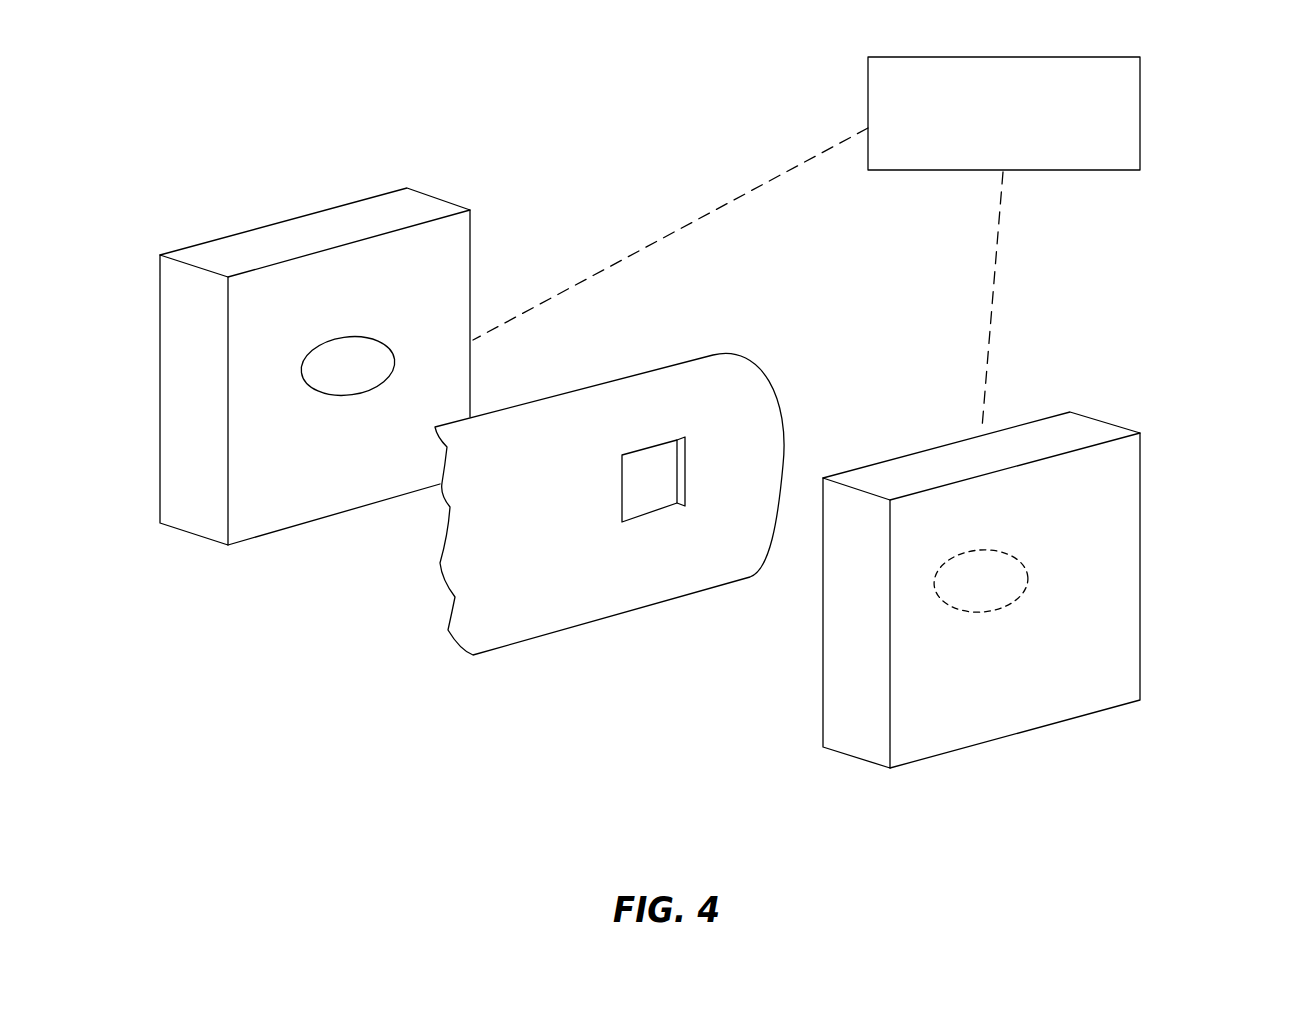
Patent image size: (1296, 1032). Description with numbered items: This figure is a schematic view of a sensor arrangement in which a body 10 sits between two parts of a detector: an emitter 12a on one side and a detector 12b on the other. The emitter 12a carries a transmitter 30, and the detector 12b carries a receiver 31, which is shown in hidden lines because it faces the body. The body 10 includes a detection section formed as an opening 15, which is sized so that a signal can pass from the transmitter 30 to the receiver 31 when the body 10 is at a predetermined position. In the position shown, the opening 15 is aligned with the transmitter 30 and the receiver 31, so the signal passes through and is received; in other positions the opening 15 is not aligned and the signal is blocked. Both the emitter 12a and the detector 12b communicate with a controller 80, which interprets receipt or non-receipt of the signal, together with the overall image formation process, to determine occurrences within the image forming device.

The body 10 is at (567, 630).
The emitter 12a is at (437, 200).
The detector 12b is at (1142, 490).
The opening 15 is at (648, 522).
The transmitter 30 is at (330, 396).
The receiver 31 is at (1000, 602).
The controller 80 is at (985, 146).